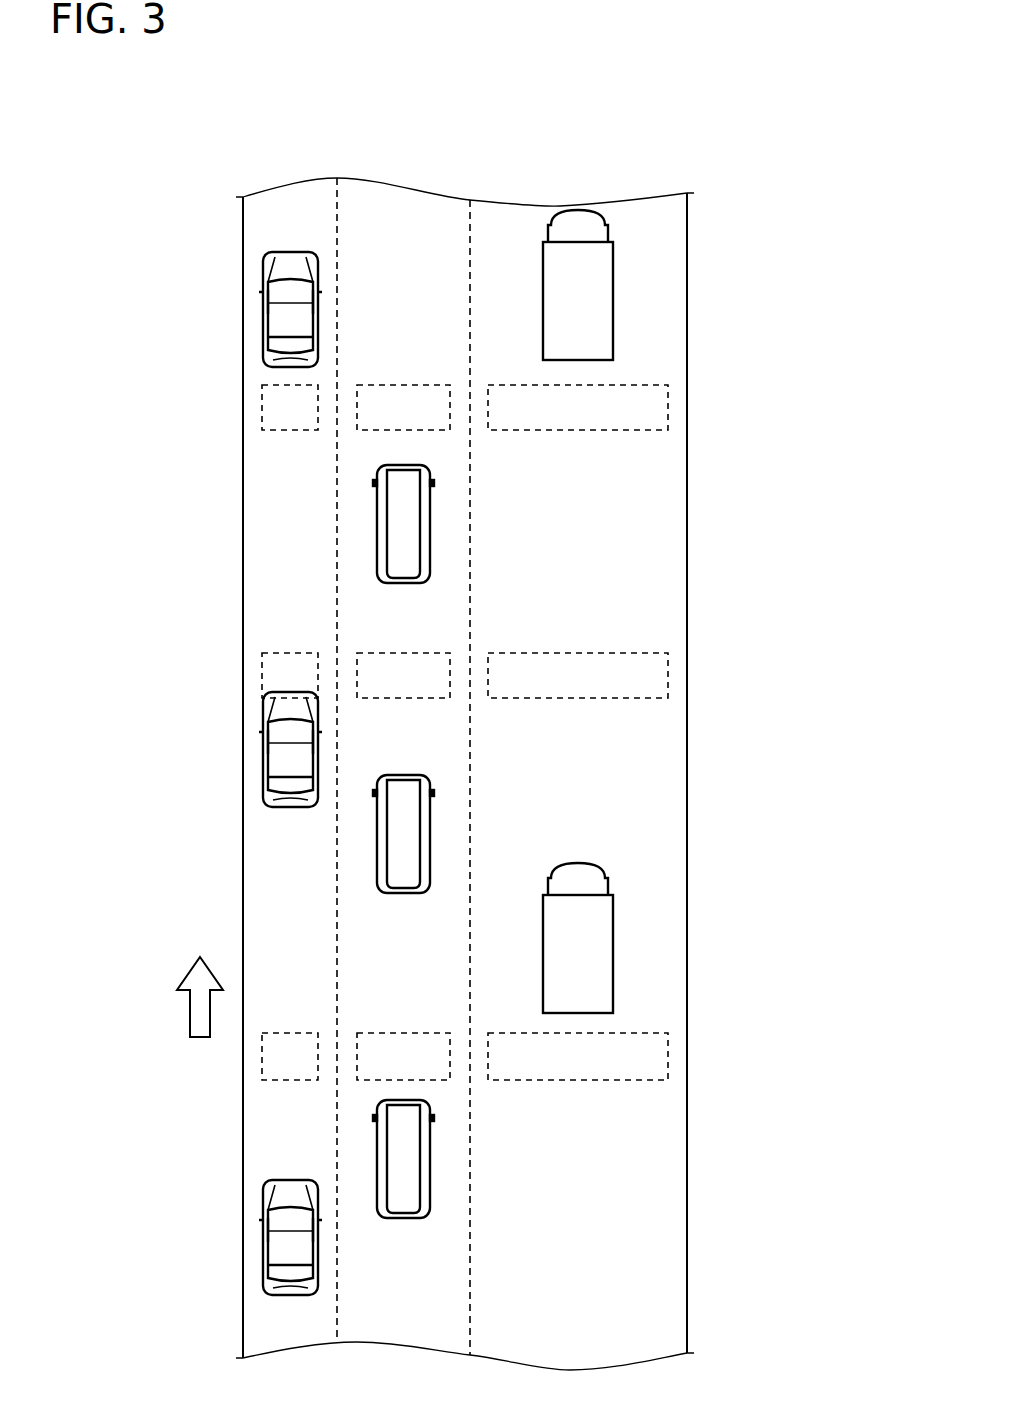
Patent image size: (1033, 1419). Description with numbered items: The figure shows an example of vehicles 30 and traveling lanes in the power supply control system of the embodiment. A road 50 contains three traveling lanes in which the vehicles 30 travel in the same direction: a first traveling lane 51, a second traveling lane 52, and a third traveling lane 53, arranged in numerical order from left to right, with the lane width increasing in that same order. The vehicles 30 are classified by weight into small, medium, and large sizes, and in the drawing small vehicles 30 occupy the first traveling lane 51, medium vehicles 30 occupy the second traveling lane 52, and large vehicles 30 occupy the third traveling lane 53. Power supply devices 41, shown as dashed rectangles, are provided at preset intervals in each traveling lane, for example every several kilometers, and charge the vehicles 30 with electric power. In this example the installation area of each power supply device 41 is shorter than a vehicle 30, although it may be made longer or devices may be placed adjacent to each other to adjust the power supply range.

The vehicle 30 is at (283, 312).
The power supply device 41 is at (357, 430).
The road 50 is at (293, 67).
The first traveling lane 51 is at (312, 145).
The second traveling lane 52 is at (418, 145).
The third traveling lane 53 is at (598, 145).